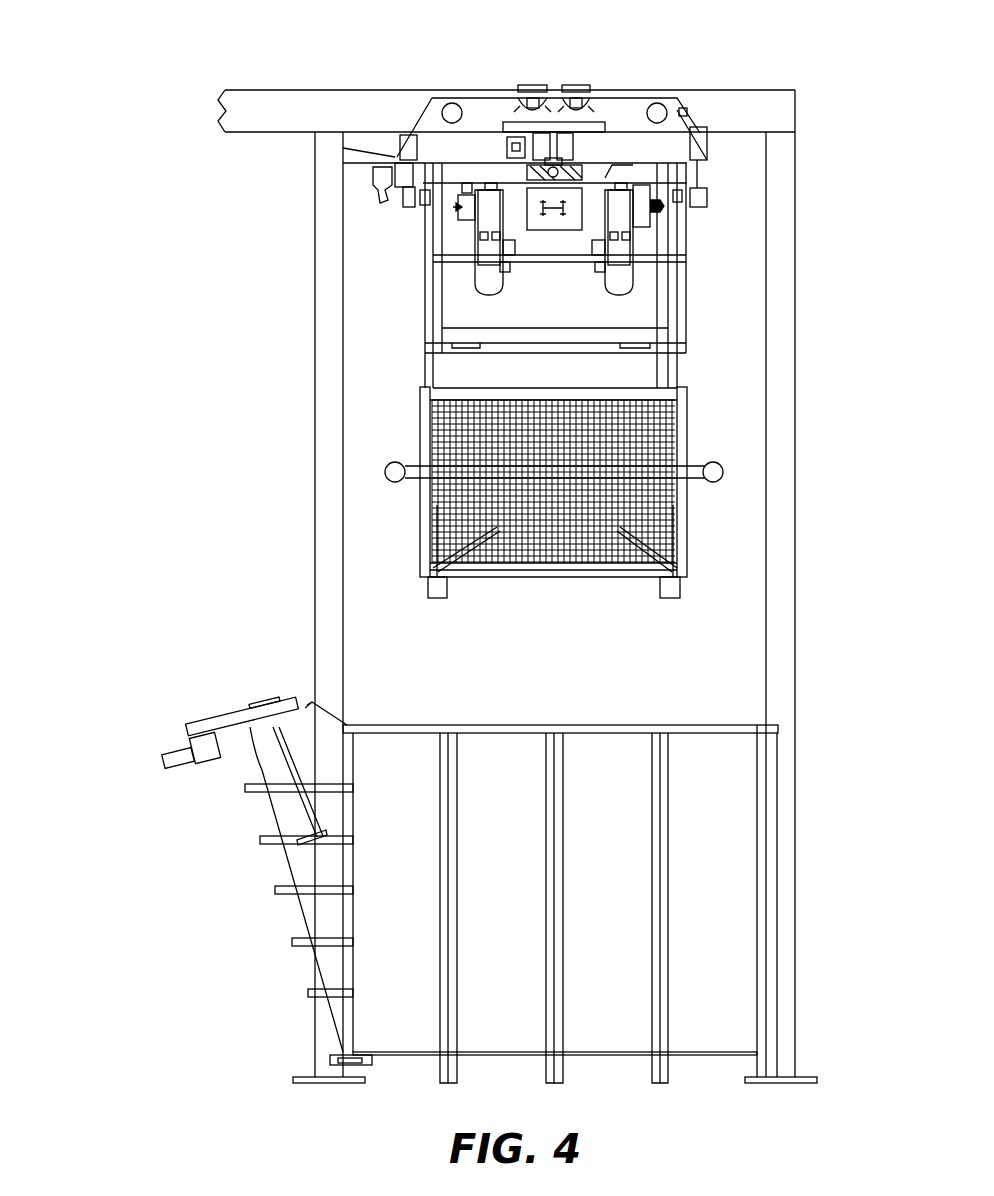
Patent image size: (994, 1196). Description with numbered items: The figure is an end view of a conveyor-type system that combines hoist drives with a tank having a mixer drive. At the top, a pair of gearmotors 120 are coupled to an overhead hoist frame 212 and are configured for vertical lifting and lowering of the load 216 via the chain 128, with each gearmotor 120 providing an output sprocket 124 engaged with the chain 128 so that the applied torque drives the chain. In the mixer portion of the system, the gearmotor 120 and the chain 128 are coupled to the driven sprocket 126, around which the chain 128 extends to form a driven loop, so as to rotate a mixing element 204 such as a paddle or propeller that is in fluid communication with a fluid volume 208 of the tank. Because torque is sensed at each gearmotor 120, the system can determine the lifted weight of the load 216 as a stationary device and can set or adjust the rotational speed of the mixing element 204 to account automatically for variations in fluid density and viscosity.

The gearmotor 120 is at (448, 236).
The output sprocket 124 is at (446, 205).
The driven sprocket 126 is at (257, 702).
The chain 128 is at (458, 186).
The mixing element 204 is at (303, 843).
The fluid volume 208 is at (293, 960).
The overhead hoist frame 212 is at (377, 105).
The load 216 is at (395, 433).